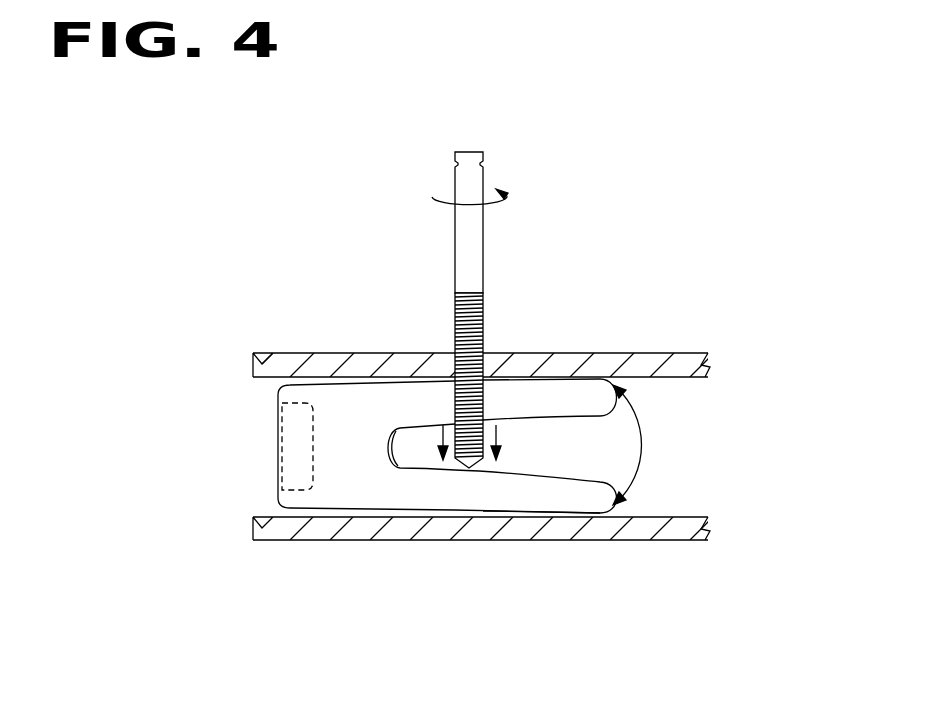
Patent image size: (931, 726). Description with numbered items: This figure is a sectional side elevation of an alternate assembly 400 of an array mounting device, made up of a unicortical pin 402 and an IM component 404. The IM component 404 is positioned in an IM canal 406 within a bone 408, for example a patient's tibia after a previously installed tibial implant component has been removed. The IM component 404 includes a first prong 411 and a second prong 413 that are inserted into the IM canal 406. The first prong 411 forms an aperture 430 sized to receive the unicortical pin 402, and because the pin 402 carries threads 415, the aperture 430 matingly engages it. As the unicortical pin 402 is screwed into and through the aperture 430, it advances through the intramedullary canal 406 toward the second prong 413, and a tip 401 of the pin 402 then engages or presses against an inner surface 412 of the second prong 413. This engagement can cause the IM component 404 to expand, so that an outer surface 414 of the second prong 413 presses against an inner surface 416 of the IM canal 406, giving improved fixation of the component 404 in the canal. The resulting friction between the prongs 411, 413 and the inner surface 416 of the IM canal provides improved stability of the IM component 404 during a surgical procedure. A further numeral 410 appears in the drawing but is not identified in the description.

The assembly 400 is at (533, 224).
The tip 401 is at (462, 387).
The unicortical pin 402 is at (455, 228).
The IM component 404 is at (326, 446).
The IM canal 406 is at (503, 473).
The bone 408 is at (668, 541).
The tongue 410 is at (397, 467).
The first prong 411 is at (577, 392).
The inner surface 412 is at (567, 477).
The second prong 413 is at (573, 500).
The outer surface 414 is at (485, 517).
The threads 415 is at (485, 320).
The inner surface 416 is at (686, 517).
The aperture 430 is at (444, 371).